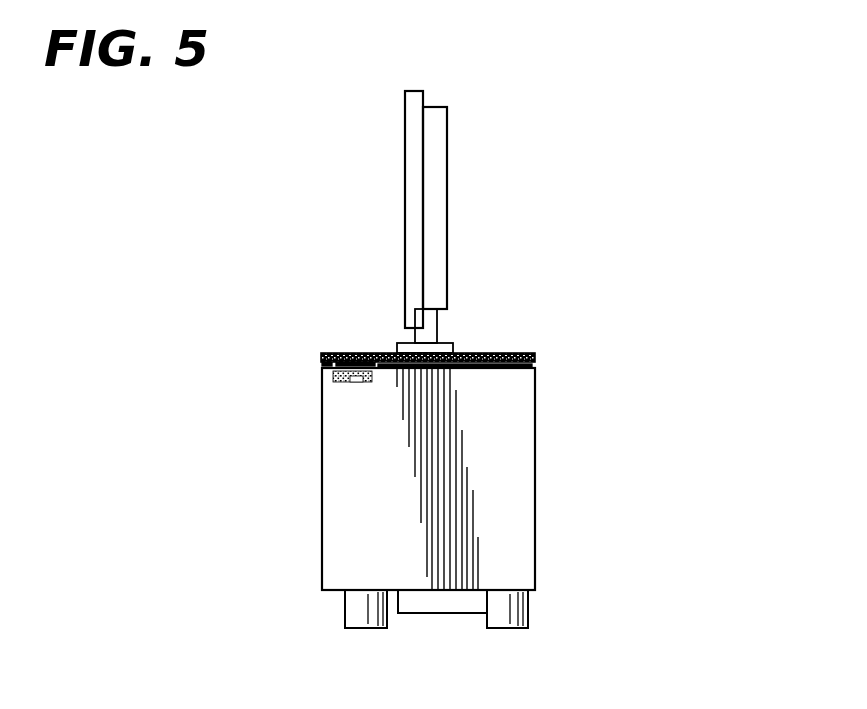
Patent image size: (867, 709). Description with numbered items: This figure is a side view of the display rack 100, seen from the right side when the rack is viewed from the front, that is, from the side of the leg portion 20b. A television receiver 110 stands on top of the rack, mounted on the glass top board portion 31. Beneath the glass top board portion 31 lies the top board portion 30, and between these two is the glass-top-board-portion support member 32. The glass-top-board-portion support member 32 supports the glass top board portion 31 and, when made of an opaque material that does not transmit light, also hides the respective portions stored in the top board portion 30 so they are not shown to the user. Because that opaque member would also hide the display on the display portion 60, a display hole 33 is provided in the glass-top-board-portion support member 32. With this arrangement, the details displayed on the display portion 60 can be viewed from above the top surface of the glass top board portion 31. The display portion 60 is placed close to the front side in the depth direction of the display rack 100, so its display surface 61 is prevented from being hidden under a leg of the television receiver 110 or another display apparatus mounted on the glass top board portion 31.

The display rack 100 is at (312, 144).
The television receiver 110 is at (428, 142).
The top board portion 30 is at (468, 340).
The glass top board portion 31 is at (528, 352).
The glass-top-board-portion support member 32 is at (537, 363).
The display hole 33 is at (360, 352).
The leg portion 20b is at (517, 513).
The display portion 60 is at (322, 379).
The display surface 61 is at (355, 383).